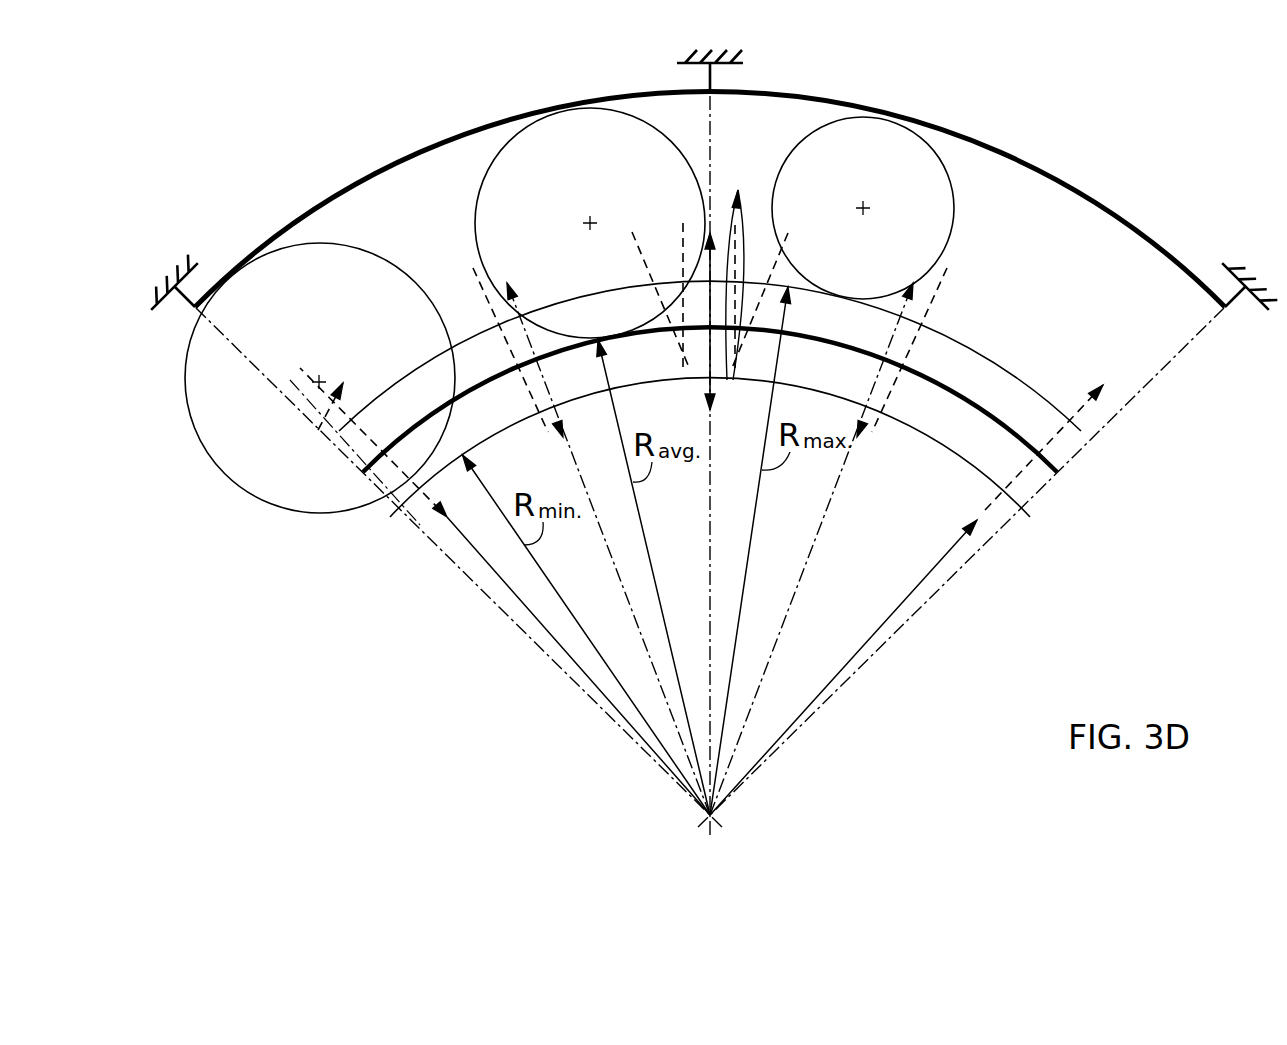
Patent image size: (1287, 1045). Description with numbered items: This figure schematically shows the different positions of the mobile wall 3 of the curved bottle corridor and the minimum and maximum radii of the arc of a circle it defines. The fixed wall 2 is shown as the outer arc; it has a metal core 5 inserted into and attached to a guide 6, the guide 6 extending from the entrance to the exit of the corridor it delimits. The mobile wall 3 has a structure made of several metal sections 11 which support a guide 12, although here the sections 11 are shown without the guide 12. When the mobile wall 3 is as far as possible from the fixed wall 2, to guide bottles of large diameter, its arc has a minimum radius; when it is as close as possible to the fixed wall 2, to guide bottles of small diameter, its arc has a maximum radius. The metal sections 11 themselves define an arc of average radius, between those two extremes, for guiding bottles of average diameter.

The fixed wall 2 is at (1008, 150).
The mobile wall 3 is at (693, 341).
The metal core 5 is at (570, 380).
The guide 6 is at (923, 367).
The metal sections 11 is at (343, 432).
The guide 12 is at (710, 387).